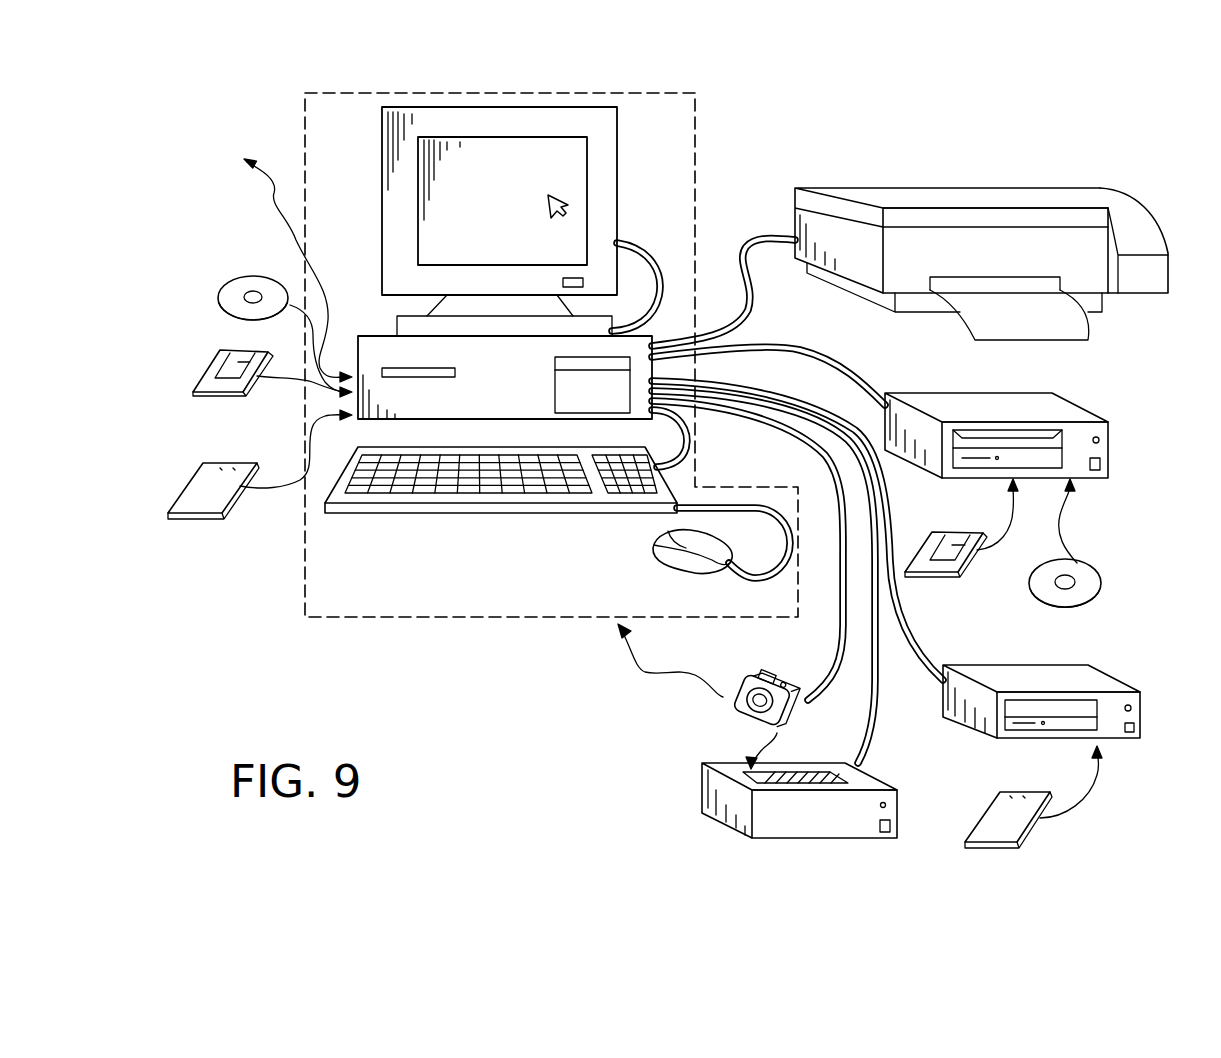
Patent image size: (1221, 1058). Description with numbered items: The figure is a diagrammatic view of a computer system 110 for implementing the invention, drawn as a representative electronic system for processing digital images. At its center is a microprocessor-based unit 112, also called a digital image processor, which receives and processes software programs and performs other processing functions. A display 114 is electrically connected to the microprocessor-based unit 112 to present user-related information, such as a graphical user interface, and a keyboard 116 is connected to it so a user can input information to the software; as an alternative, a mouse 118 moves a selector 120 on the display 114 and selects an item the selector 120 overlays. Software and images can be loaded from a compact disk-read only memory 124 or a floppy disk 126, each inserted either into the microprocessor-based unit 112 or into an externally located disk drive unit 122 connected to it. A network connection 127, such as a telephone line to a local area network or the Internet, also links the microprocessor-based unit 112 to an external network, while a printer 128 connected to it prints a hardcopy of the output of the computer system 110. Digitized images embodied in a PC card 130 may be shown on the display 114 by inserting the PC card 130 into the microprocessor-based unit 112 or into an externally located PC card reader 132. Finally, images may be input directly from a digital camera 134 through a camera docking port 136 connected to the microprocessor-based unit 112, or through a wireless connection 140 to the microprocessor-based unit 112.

The computer system 110 is at (697, 122).
The microprocessor-based unit 112 is at (397, 333).
The display 114 is at (620, 140).
The keyboard 116 is at (497, 510).
The mouse 118 is at (674, 560).
The selector 120 is at (570, 203).
The disk drive unit 122 is at (1075, 413).
The compact disk-read only memory (CD-ROM) 124 is at (232, 285).
The floppy disk 126 is at (213, 370).
The network connection 127 is at (270, 200).
The printer 128 is at (938, 193).
The PC card 130 is at (195, 483).
The PC card reader 132 is at (1100, 682).
The digital camera 134 is at (742, 705).
The camera docking port 136 is at (703, 795).
The wireless connection 140 is at (659, 660).